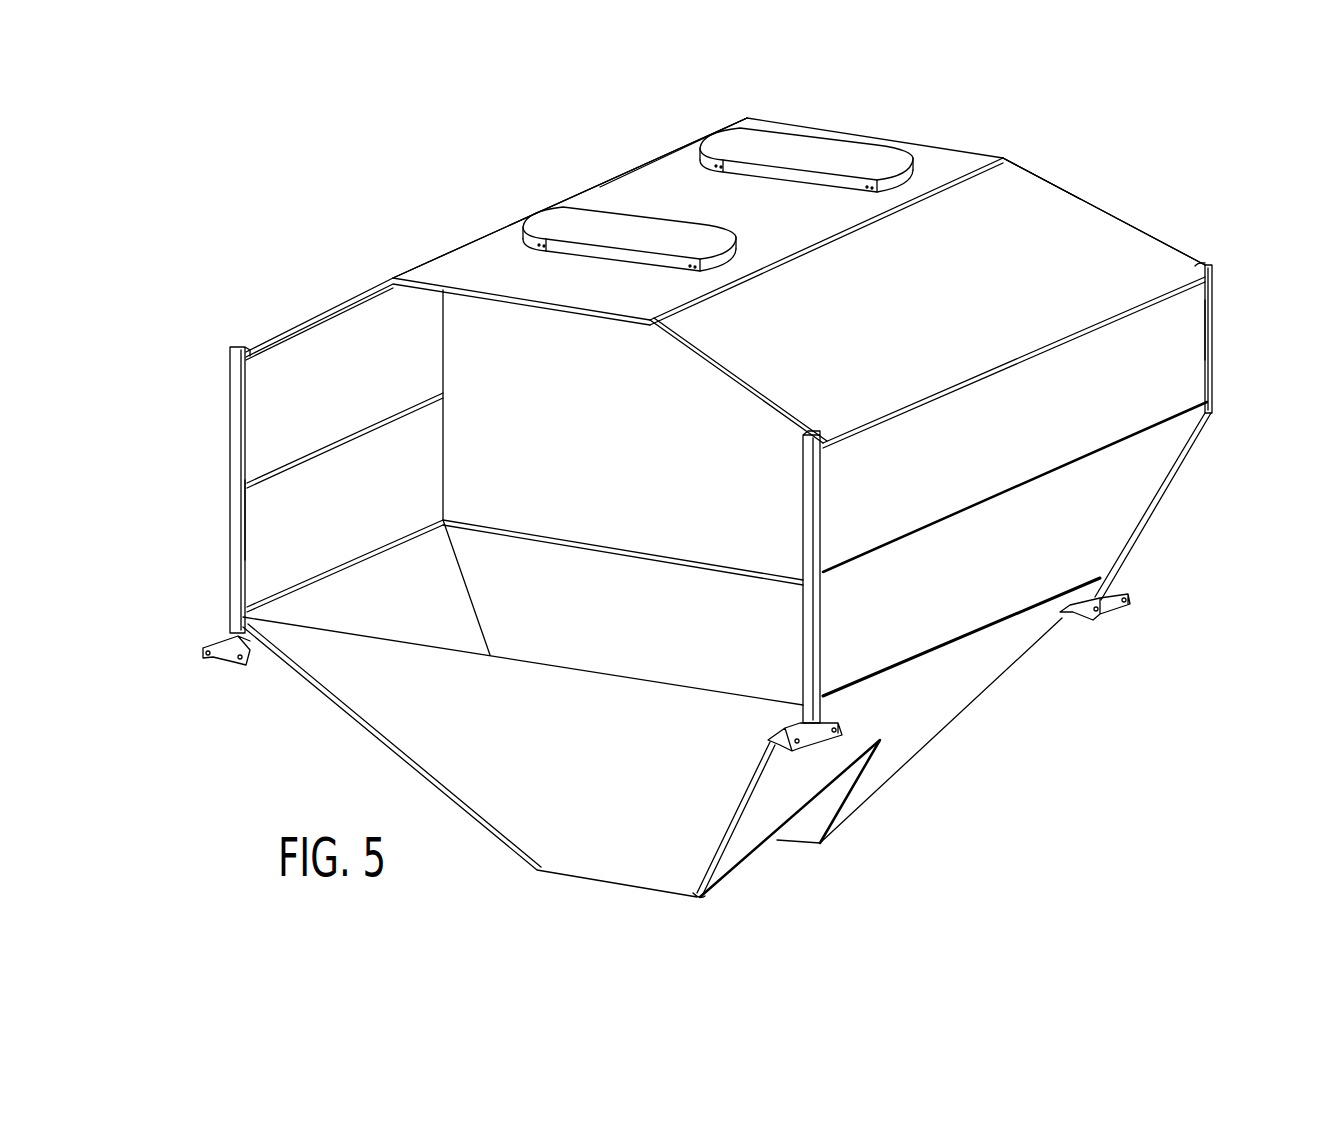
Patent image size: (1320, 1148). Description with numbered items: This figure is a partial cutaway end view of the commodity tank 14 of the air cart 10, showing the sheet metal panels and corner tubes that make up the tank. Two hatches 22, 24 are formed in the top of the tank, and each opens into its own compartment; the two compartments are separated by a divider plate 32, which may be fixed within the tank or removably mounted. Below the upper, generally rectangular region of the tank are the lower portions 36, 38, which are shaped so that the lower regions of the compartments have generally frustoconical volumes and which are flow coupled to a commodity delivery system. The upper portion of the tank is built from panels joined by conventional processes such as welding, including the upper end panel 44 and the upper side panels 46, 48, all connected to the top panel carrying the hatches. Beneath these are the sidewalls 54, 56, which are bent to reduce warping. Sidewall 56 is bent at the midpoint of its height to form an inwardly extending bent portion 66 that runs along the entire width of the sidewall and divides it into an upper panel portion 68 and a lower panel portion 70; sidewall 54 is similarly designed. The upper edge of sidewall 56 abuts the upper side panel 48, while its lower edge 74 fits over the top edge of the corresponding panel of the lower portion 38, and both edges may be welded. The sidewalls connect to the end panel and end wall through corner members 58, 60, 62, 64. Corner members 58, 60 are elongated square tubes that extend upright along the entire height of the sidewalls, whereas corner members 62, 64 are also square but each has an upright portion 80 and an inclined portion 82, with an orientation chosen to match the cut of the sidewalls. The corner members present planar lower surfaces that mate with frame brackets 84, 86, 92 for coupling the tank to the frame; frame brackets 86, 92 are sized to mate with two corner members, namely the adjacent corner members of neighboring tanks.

The air cart 10 is at (1126, 150).
The commodity tank 14 is at (480, 236).
The hatch 22 is at (576, 213).
The hatch 24 is at (828, 150).
The divider plate 32 is at (569, 433).
The lower portion 36 is at (940, 713).
The lower portion 38 is at (417, 750).
The upper end panel 44 is at (1142, 236).
The upper side panel 46 is at (1043, 200).
The upper side panel 48 is at (357, 295).
The sidewall 54 is at (1193, 373).
The sidewall 56 is at (278, 376).
The corner member 58 is at (822, 512).
The corner member 60 is at (230, 373).
The corner member 62 is at (620, 170).
The corner member 64 is at (1213, 274).
The bent portion 66 is at (327, 446).
The upper panel portion 68 is at (315, 335).
The lower panel portion 70 is at (258, 547).
The lower edge 74 is at (373, 562).
The upright portion 80 is at (1210, 318).
The inclined portion 82 is at (1150, 513).
The frame bracket 84 is at (1110, 622).
The frame bracket 86 is at (790, 727).
The frame bracket 92 is at (222, 640).